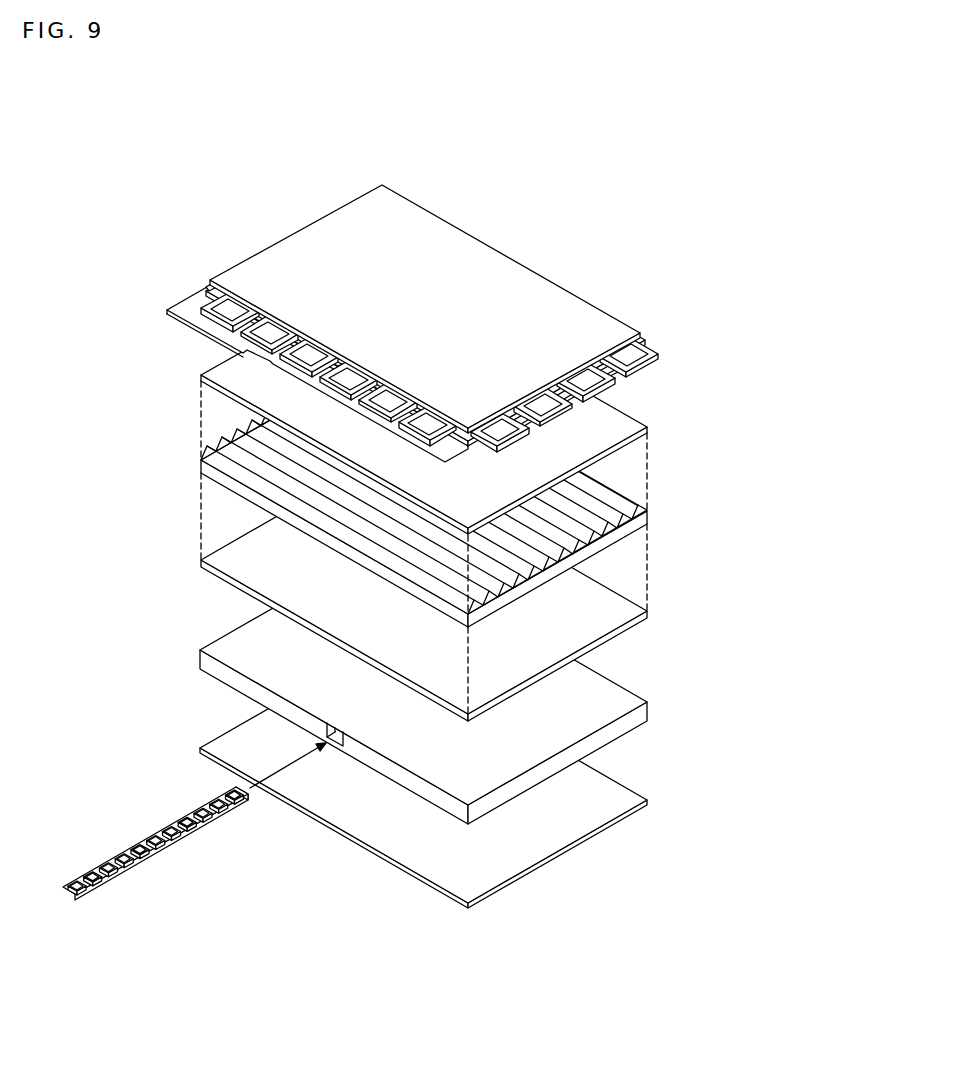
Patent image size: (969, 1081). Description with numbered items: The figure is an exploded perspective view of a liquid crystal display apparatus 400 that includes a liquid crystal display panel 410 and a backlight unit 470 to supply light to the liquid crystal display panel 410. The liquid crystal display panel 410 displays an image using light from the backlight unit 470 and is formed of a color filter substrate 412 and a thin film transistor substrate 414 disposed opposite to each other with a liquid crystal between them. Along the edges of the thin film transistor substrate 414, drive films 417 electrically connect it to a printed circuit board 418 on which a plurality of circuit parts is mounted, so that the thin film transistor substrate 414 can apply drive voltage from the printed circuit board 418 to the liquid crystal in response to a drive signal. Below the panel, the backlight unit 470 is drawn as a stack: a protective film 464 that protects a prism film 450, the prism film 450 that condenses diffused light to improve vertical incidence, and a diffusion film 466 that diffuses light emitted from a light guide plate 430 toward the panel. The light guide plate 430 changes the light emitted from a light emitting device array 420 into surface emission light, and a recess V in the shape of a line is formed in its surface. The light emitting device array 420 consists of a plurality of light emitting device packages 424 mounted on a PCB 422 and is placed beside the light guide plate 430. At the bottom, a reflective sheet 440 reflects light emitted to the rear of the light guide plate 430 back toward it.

The liquid crystal display apparatus 400 is at (144, 150).
The liquid crystal display panel 410 is at (461, 323).
The color filter substrate 412 is at (600, 328).
The thin film transistor substrate 414 is at (641, 340).
The drive films 417 is at (197, 293).
The printed circuit board 418 is at (186, 310).
The light emitting device array 420 is at (169, 863).
The PCB 422 is at (145, 863).
The light emitting device packages 424 is at (175, 847).
The light guide plate 430 is at (623, 723).
The reflective sheet 440 is at (623, 798).
The prism film 450 is at (627, 527).
The protective film 464 is at (630, 440).
The diffusion film 466 is at (620, 613).
The backlight unit 470 is at (770, 440).
The recess V is at (333, 741).